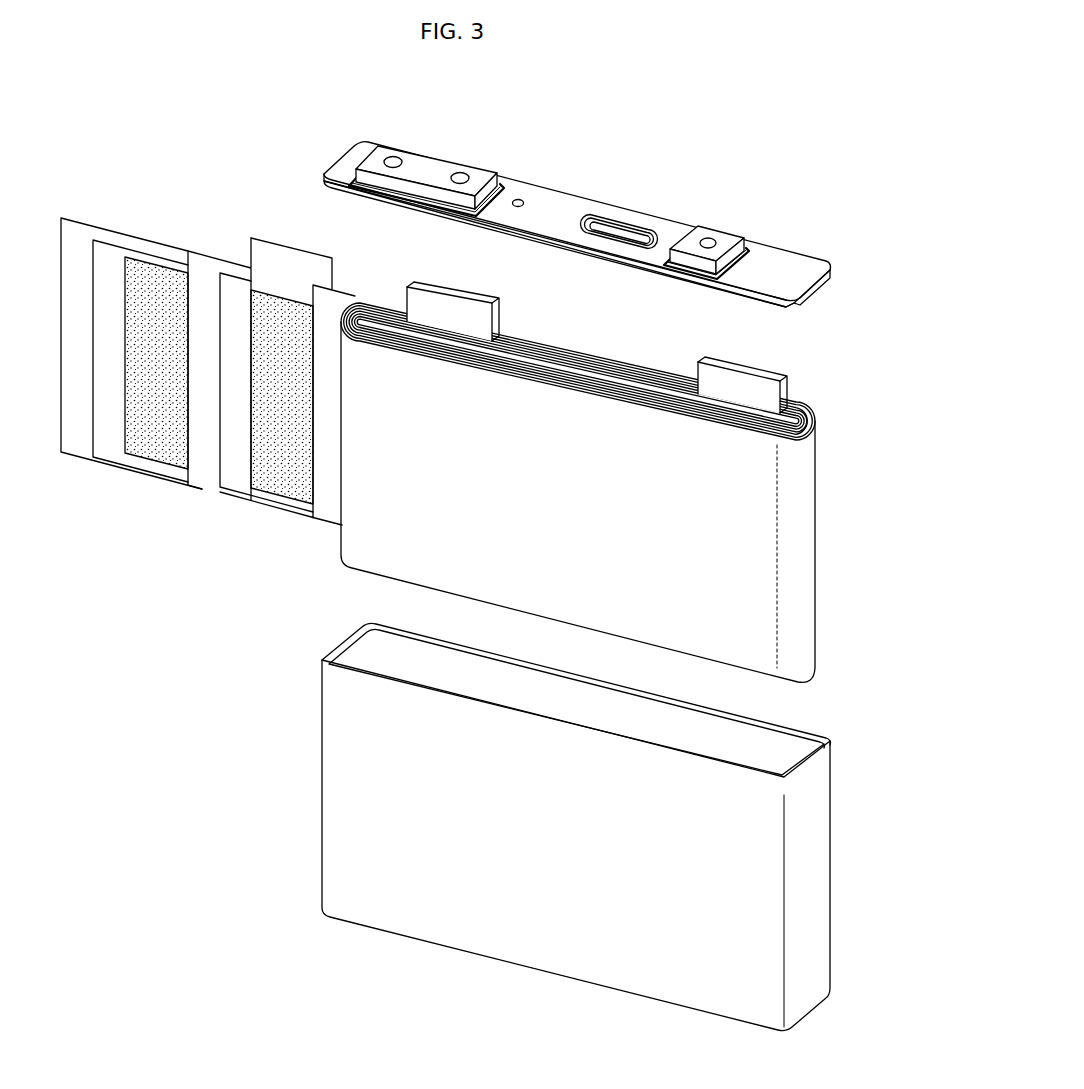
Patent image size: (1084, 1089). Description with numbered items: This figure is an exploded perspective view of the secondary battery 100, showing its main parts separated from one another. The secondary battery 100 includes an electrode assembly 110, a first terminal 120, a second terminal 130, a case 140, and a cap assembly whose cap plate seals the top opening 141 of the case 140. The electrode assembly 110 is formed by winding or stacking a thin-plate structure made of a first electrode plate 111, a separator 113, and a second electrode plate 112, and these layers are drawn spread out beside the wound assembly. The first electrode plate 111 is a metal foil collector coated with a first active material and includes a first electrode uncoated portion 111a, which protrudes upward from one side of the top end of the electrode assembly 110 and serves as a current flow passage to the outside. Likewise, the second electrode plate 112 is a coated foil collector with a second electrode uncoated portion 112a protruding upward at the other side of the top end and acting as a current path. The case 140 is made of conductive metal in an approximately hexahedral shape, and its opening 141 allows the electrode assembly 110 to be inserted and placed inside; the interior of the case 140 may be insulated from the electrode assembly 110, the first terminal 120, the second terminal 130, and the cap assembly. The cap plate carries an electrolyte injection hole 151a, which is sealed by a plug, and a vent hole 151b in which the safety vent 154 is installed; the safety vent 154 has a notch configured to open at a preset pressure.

The secondary battery 100 is at (896, 156).
The electrode assembly 110 is at (835, 530).
The first electrode plate 111 is at (238, 276).
The first electrode uncoated portion 111a is at (448, 293).
The second electrode plate 112 is at (142, 252).
The second electrode uncoated portion 112a is at (747, 370).
The separator 113 is at (324, 500).
The first terminal 120 is at (437, 150).
The second terminal 130 is at (730, 221).
The case 140 is at (847, 872).
The opening 141 is at (812, 745).
The electrolyte injection hole 151a is at (518, 197).
The vent hole 151b is at (633, 226).
The safety vent 154 is at (606, 211).